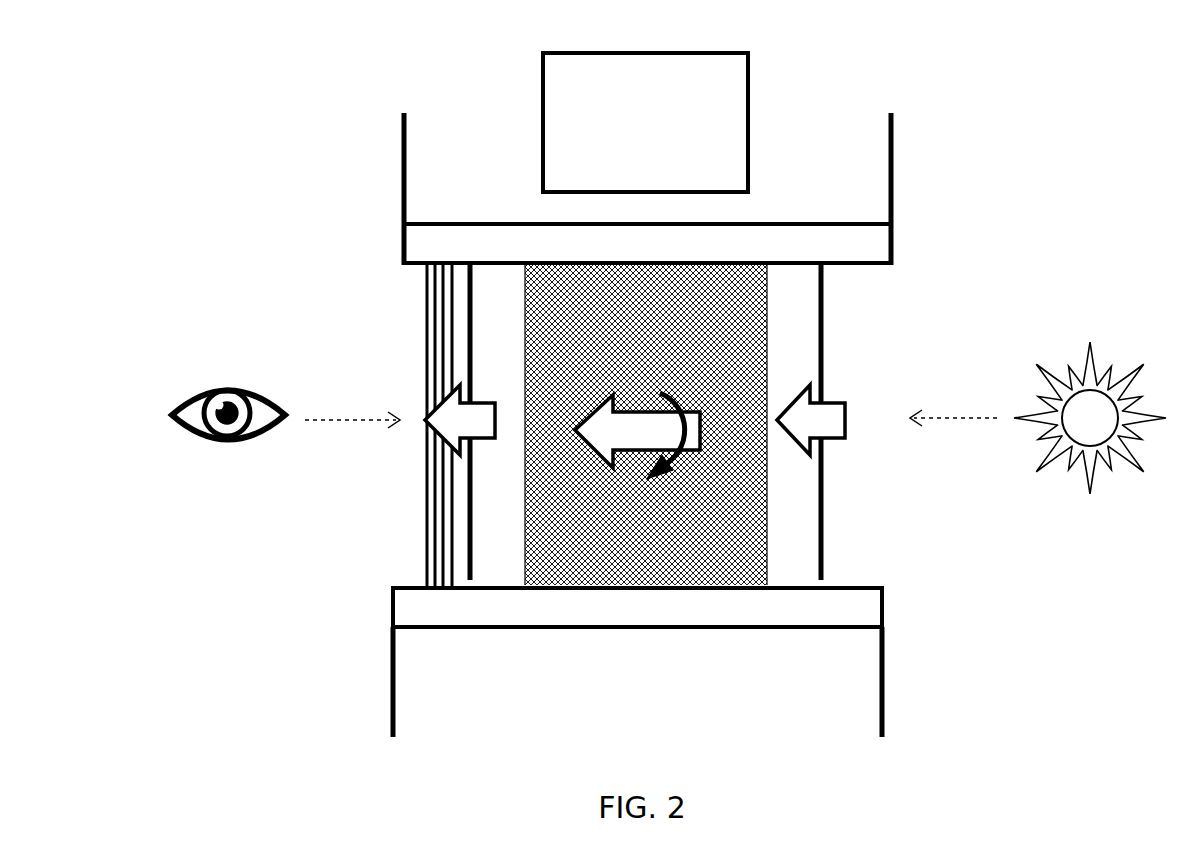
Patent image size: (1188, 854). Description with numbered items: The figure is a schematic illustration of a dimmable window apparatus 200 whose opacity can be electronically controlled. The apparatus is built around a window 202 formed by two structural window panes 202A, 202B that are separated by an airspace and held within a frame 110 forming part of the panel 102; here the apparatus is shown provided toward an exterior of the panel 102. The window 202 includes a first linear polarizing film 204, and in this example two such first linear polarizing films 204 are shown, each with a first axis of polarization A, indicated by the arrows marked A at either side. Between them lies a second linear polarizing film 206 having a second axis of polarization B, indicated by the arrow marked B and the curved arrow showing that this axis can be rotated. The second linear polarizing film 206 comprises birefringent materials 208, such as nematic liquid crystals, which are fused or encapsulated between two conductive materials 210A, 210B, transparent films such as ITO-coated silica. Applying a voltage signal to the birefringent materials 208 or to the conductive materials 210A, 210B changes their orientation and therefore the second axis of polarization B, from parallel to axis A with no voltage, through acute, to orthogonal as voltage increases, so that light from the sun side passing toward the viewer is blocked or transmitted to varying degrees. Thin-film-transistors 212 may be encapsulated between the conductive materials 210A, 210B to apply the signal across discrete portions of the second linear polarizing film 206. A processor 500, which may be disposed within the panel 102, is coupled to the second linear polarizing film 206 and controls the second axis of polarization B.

The dimmable window apparatus 200 is at (669, 409).
The panel 102 is at (840, 198).
The frame 110 is at (647, 244).
The processor 500 is at (645, 122).
The window 202 is at (333, 330).
The structural window pane 202A is at (427, 300).
The structural window pane 202B is at (427, 330).
The first linear polarizing film 204 is at (473, 533).
The second linear polarizing film 206 is at (693, 514).
The birefringent materials 208 is at (646, 424).
The conductive material 210A is at (527, 550).
The conductive material 210B is at (757, 532).
The thin-film-transistors 212 is at (763, 462).